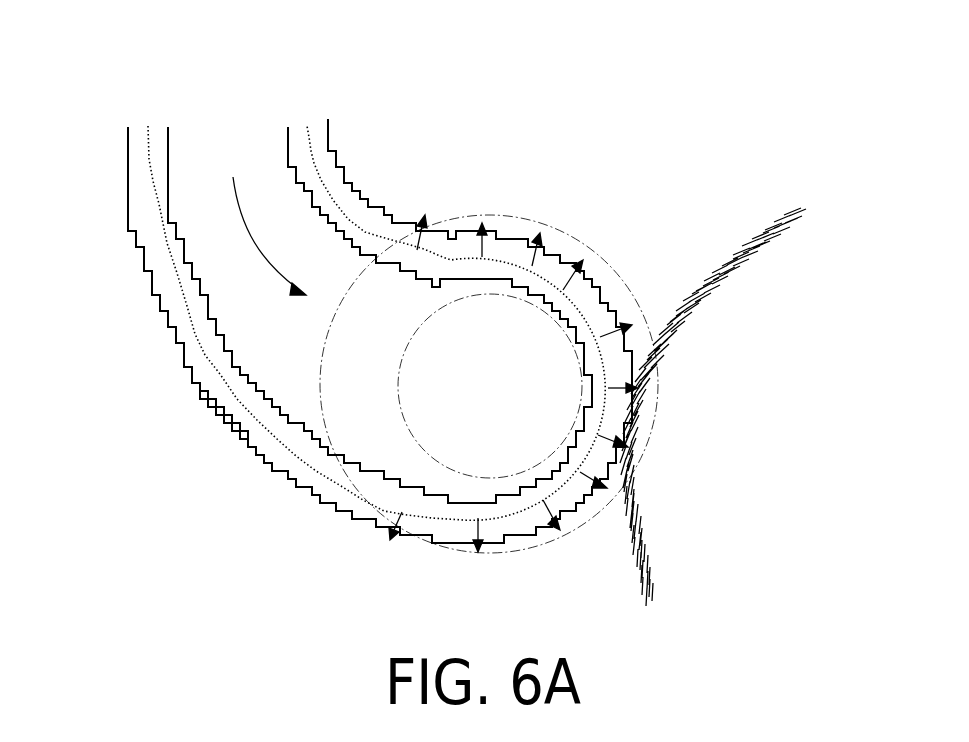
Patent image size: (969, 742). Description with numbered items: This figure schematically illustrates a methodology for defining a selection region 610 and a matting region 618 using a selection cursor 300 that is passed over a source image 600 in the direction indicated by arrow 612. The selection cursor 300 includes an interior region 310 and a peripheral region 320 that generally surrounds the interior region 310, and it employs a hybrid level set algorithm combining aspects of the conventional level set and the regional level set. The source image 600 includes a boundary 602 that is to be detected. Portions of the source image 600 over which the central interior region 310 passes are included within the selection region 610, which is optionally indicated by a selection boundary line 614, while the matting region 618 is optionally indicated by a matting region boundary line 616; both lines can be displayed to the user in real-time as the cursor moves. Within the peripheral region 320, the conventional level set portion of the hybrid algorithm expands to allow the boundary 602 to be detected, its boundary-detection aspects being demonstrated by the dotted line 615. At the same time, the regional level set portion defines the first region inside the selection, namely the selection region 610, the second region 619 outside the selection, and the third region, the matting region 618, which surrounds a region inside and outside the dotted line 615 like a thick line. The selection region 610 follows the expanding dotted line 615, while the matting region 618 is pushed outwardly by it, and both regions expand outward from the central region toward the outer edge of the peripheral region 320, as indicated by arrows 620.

The selection cursor 300 is at (489, 382).
The interior region 310 is at (464, 385).
The peripheral region 320 is at (379, 385).
The source image 600 is at (696, 179).
The boundary 602 is at (733, 256).
The selection region 610 is at (366, 335).
The arrow 612 is at (278, 283).
The selection boundary line 614 is at (240, 367).
The dotted line 615 is at (197, 343).
The matting region boundary line 616 is at (202, 392).
The matting region 618 is at (243, 414).
The second region 619 is at (282, 489).
The arrows 620 is at (560, 528).